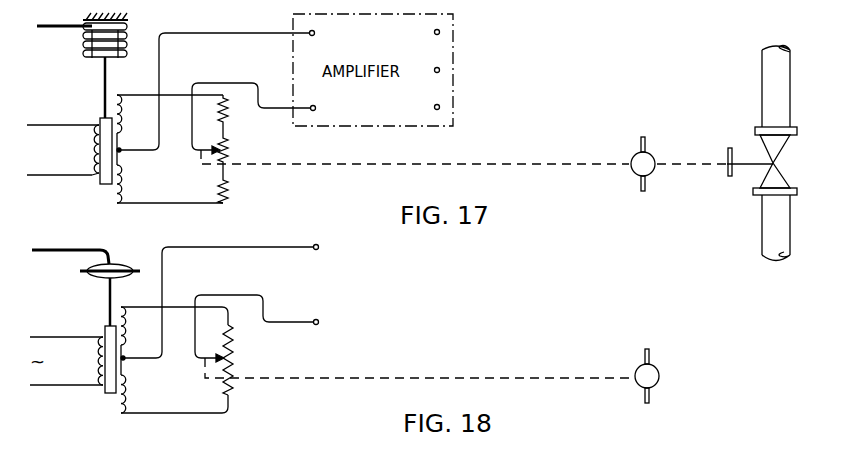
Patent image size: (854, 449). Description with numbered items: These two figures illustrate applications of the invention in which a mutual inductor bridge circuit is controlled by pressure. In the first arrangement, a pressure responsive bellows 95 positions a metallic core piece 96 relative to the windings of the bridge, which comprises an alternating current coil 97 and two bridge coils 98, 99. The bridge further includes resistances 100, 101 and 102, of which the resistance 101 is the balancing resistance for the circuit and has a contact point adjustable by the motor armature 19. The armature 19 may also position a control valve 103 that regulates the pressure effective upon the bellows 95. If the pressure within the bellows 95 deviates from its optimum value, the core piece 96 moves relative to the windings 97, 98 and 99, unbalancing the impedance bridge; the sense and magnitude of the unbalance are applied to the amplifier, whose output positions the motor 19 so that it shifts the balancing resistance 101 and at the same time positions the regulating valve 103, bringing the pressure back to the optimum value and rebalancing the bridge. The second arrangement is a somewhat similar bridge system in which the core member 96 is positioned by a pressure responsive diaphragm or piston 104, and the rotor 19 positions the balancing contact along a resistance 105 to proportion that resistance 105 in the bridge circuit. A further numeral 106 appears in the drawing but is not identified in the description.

In FIG. 17, the motor armature 19 is at (651, 154).
In FIG. 18, the motor armature 19 is at (656, 366).
In FIG. 17, the pressure responsive bellows 95 is at (83, 44).
In FIG. 17, the metallic core piece 96 is at (106, 185).
In FIG. 18, the metallic core piece 96 is at (107, 394).
In FIG. 17, the alternating current coil 97 is at (63, 150).
In FIG. 17, the bridge coil 98 is at (170, 130).
In FIG. 17, the bridge coil 99 is at (170, 184).
In FIG. 17, the resistance 100 is at (228, 108).
In FIG. 17, the balancing resistance 101 is at (230, 150).
In FIG. 17, the resistance 102 is at (229, 188).
In FIG. 17, the control valve 103 is at (748, 214).
In FIG. 18, the pressure responsive diaphragm or piston 104 is at (93, 279).
In FIG. 18, the resistance 105 is at (281, 364).
In FIG. 18, the conductor 106 is at (144, 445).